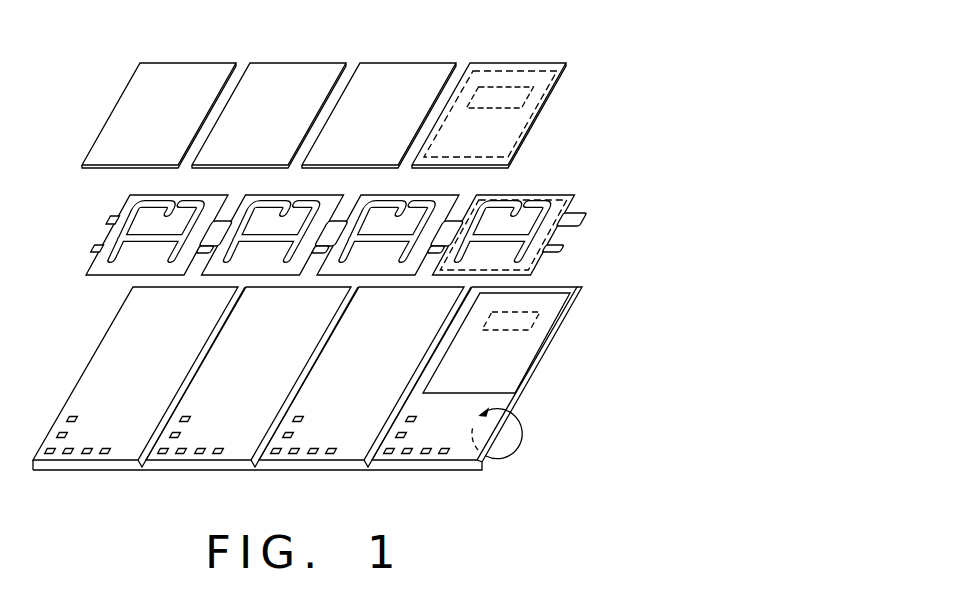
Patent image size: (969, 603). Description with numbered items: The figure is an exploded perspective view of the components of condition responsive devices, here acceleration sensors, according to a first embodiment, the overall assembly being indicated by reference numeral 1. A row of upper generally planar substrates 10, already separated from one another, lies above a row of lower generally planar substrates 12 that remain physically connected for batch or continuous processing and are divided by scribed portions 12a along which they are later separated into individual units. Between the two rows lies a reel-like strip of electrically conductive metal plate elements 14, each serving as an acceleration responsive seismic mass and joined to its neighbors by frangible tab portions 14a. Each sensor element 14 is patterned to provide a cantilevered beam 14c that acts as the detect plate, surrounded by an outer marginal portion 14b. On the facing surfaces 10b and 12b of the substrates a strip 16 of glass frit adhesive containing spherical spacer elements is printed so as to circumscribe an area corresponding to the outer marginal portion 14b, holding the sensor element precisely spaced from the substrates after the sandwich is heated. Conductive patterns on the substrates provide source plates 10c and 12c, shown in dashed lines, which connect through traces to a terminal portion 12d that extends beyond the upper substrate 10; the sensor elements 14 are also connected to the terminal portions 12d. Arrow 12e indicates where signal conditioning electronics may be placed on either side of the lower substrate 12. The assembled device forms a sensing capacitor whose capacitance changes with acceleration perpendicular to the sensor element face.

The semiconductor device assembly 1 is at (573, 31).
The upper substrate 10 is at (182, 68).
The facing surface 10b is at (505, 127).
The source plate 10c is at (538, 94).
The lower substrate 12 is at (128, 441).
The scribed portion 12a is at (180, 399).
The facing surface 12b is at (541, 332).
The source plate 12c is at (505, 333).
The terminal portion 12d is at (78, 424).
The arrow 12e is at (523, 439).
The metal plate element 14 is at (143, 257).
The frangible tab portion 14a is at (108, 219).
The outer marginal portion 14b is at (517, 216).
The cantilevered beam 14c is at (568, 198).
The strip of adhesive material 16 is at (517, 70).